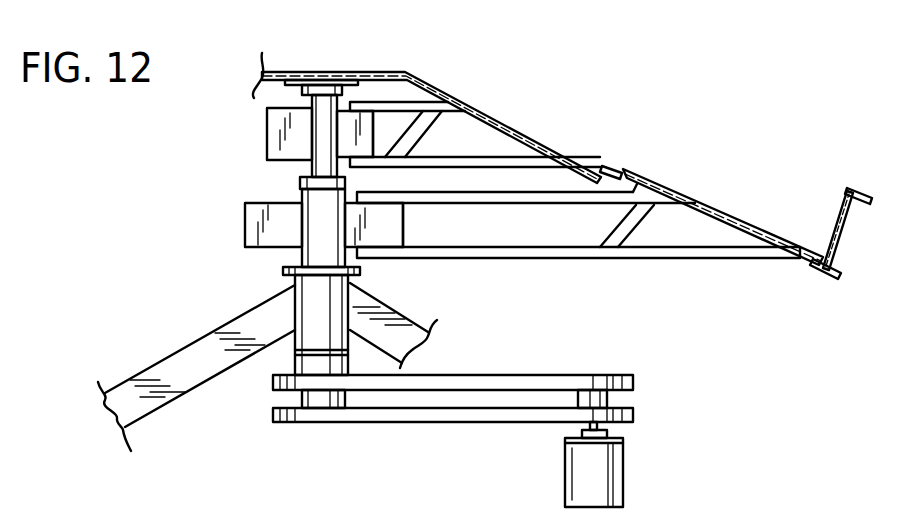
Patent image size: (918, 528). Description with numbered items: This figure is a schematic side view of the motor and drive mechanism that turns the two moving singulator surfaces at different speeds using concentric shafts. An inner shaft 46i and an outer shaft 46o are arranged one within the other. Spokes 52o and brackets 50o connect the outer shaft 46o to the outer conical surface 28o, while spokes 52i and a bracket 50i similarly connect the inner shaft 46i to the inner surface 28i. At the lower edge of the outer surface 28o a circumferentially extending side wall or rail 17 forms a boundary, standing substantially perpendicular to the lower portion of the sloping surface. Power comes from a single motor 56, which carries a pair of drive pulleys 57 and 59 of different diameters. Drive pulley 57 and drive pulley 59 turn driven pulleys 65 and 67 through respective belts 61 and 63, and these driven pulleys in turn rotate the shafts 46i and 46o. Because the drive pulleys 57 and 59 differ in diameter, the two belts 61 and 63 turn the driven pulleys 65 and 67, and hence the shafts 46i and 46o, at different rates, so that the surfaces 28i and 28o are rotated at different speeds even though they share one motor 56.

The side wall or rail 17 is at (841, 212).
The inner conical surface 28i is at (504, 118).
The outer conical surface 28o is at (690, 197).
The inner shaft 46i is at (312, 178).
The outer shaft 46o is at (284, 268).
The bracket 50i is at (268, 118).
The brackets 50o is at (245, 221).
The spokes 52i is at (426, 168).
The spokes 52o is at (718, 262).
The motor 56 is at (624, 491).
The drive pulley 57 is at (600, 427).
The drive pulley 59 is at (608, 401).
The belt 61 is at (480, 424).
The belt 63 is at (499, 375).
The driven pulley 65 is at (344, 402).
The driven pulley 67 is at (278, 406).